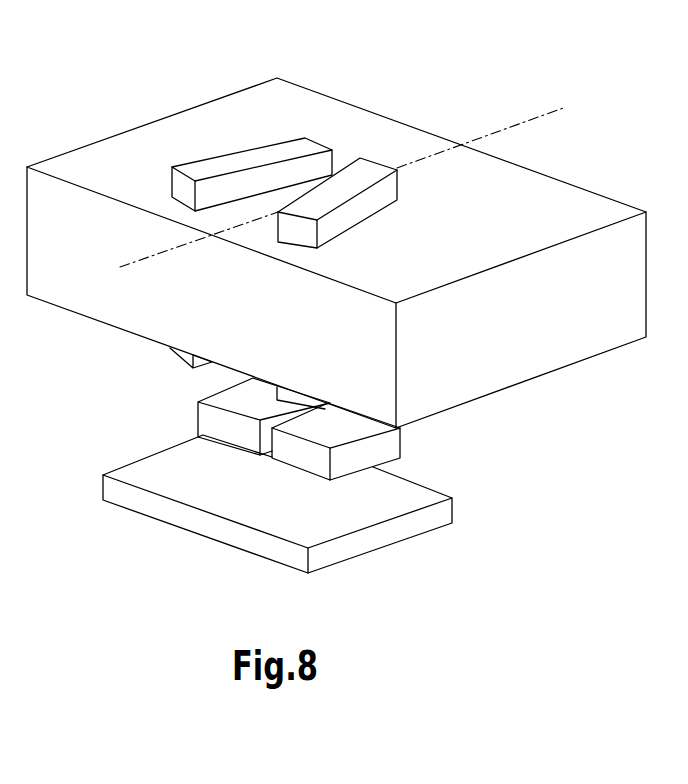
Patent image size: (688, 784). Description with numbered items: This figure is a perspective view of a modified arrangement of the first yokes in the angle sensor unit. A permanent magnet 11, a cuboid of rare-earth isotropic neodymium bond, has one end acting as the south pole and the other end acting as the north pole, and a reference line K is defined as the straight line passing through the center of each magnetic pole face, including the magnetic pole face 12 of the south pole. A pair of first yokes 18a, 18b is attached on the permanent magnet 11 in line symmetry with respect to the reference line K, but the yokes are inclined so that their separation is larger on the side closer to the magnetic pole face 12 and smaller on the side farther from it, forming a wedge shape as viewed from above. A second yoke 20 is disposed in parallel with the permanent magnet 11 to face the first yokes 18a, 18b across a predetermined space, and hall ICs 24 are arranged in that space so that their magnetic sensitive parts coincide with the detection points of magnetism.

The permanent magnet 11 is at (100, 160).
The magnetic pole face 12 is at (53, 283).
The first yoke 18a is at (302, 147).
The first yoke 18b is at (361, 158).
The second yoke 20 is at (347, 522).
The hall IC 24 is at (380, 450).
The reference line K is at (355, 176).